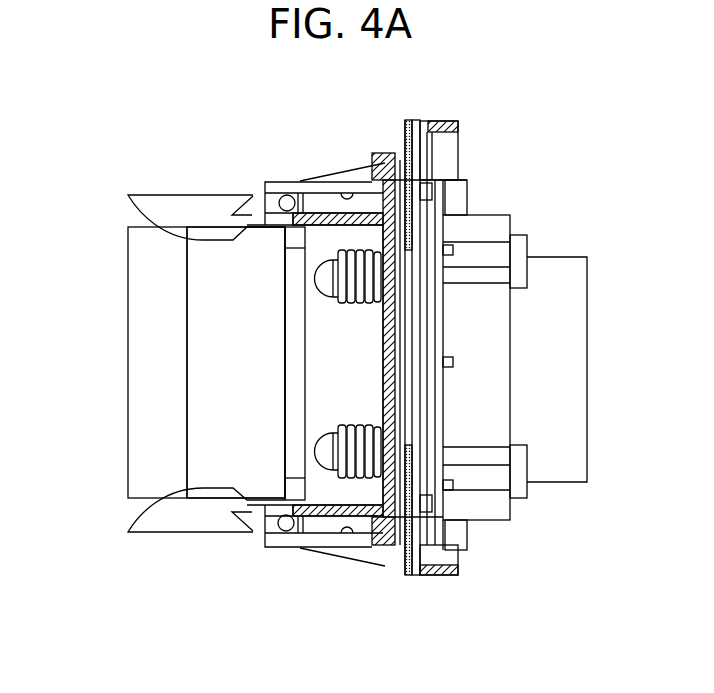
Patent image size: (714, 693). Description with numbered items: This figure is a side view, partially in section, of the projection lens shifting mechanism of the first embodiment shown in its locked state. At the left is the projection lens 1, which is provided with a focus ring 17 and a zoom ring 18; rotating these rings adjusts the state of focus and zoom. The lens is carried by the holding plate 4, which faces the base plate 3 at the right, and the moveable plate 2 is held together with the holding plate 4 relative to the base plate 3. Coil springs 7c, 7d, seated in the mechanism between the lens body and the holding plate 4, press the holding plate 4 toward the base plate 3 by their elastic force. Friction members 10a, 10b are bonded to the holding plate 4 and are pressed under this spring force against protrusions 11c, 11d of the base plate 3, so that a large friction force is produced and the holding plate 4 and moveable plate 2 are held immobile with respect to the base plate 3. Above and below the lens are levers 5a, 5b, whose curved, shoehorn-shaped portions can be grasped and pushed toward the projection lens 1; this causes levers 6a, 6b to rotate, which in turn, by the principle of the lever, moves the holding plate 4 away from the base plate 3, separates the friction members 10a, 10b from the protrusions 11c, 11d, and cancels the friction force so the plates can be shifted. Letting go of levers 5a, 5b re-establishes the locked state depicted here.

The projection lens 1 is at (293, 325).
The moveable plate 2 is at (497, 225).
The base plate 3 is at (418, 143).
The holding plate 4 is at (378, 155).
The lever 5a is at (188, 212).
The lever 5b is at (197, 518).
The lever 6a is at (313, 187).
The lever 6b is at (310, 537).
The coil spring 7c is at (352, 250).
The coil spring 7d is at (370, 480).
The friction member 10a is at (402, 165).
The friction member 10b is at (402, 576).
The protrusion 11c is at (403, 130).
The protrusion 11d is at (409, 574).
The focus ring 17 is at (147, 257).
The zoom ring 18 is at (203, 442).